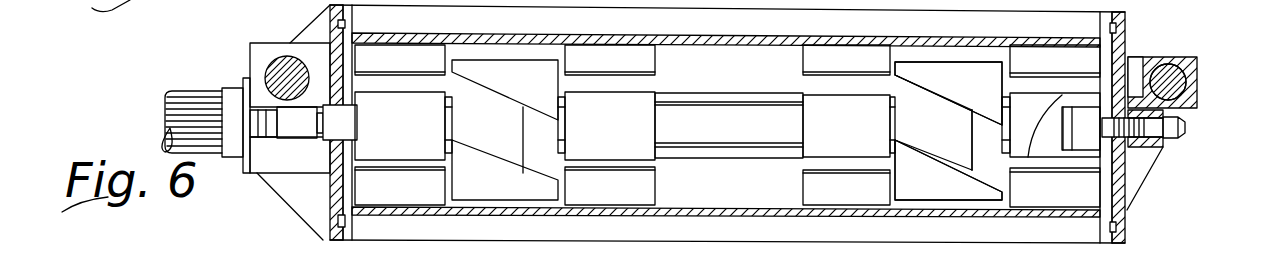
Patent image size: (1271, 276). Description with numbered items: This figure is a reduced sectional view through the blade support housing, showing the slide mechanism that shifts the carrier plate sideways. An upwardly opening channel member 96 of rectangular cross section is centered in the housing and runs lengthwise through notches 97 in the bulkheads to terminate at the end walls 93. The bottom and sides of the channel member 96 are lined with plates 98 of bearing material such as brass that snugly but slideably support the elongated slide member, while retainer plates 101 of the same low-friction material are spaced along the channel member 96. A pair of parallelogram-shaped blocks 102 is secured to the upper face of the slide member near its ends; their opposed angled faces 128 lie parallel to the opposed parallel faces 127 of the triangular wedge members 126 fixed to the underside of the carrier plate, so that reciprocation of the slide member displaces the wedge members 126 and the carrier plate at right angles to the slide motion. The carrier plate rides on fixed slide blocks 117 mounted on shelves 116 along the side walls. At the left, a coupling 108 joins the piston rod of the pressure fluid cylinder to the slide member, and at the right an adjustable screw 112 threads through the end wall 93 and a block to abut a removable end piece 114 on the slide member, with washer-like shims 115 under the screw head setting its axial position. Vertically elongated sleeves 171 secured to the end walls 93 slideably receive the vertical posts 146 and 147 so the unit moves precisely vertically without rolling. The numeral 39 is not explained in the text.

The shaft 39 is at (729, 125).
The end wall 93 is at (324, 199).
The channel member 96 is at (704, 100).
The notch 97 is at (740, 97).
The plate 98 is at (662, 100).
The retainer plate 101 is at (846, 126).
The parallelogram-shaped block 102 is at (937, 122).
The coupling 108 is at (297, 128).
The adjustable screw 112 is at (1187, 128).
The removable end piece 114 is at (1072, 125).
The shim 115 is at (1163, 146).
The shelf 116 is at (810, 164).
The slide block 117 is at (846, 60).
The wedge member 126 is at (950, 131).
The face 127 is at (980, 118).
The angled face 128 is at (928, 24).
The vertical post 146 is at (284, 58).
The vertical post 147 is at (1160, 60).
The sleeve 171 is at (255, 58).